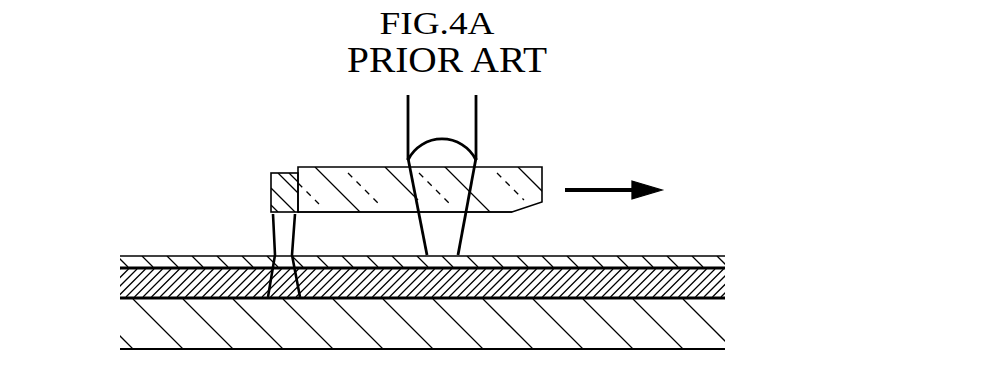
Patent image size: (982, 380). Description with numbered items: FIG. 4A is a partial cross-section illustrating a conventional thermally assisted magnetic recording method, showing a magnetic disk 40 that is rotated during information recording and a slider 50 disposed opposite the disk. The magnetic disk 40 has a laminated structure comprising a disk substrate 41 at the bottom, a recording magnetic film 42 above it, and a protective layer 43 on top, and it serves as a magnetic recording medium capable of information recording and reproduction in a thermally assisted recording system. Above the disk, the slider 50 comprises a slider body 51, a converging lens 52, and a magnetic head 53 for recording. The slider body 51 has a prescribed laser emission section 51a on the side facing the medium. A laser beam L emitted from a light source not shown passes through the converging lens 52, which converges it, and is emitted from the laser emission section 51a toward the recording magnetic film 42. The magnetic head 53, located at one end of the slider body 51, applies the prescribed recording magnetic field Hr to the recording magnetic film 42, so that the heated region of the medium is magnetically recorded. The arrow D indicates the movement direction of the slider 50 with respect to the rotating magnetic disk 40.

The magnetic disk 40 is at (433, 261).
The disk substrate 41 is at (720, 322).
The recording magnetic film 42 is at (722, 280).
The protective layer 43 is at (724, 260).
The slider 50 is at (376, 171).
The slider body 51 is at (344, 178).
The laser emission section 51a is at (441, 214).
The converging lens 52 is at (444, 146).
The magnetic head 53 is at (270, 184).
The laser beam L is at (462, 229).
The recording magnetic field Hr is at (269, 240).
The movement direction D is at (613, 177).